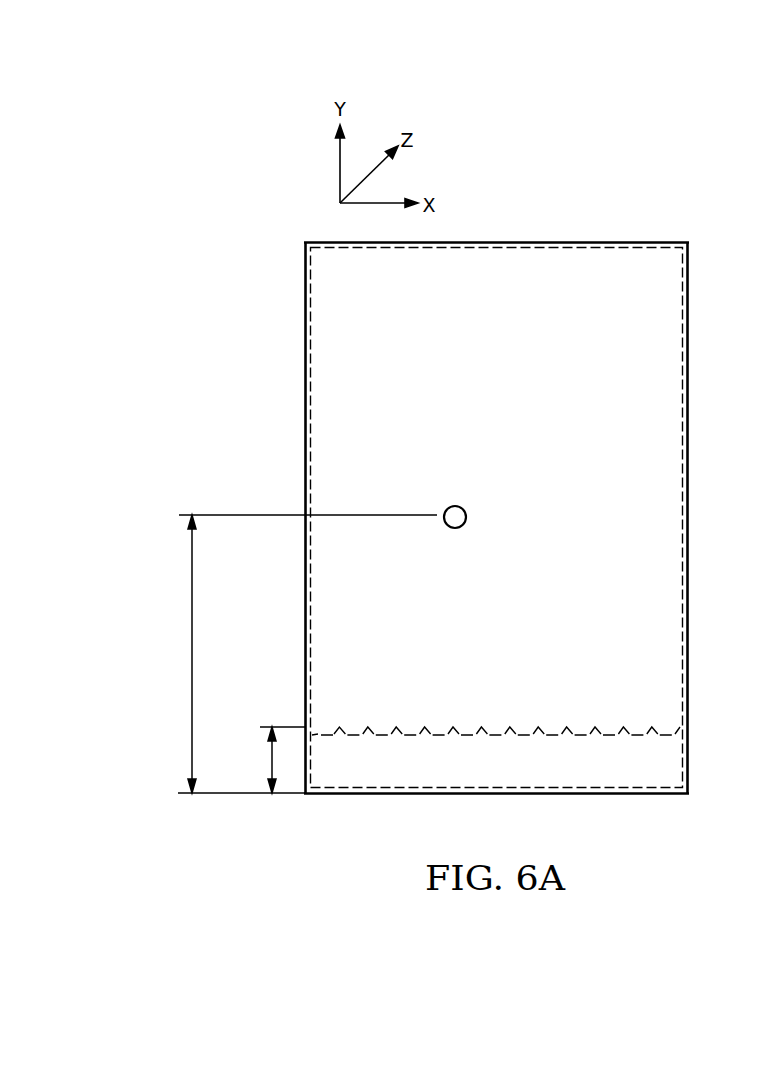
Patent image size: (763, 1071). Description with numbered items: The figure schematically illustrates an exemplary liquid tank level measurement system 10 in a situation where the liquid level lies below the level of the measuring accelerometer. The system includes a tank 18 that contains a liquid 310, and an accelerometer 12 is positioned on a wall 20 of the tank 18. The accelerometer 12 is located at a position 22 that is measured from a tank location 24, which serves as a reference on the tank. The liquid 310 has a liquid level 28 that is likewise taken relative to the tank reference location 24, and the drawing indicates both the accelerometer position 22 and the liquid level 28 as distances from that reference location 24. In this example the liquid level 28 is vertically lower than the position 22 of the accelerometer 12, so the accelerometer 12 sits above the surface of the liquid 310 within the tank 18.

The liquid tank level measurement system 10 is at (527, 463).
The accelerometer 12 is at (451, 505).
The tank 18 is at (690, 600).
The wall 20 is at (575, 241).
The position 22 is at (190, 655).
The tank location 24 is at (612, 795).
The liquid level 28 is at (270, 760).
The liquid 310 is at (497, 727).